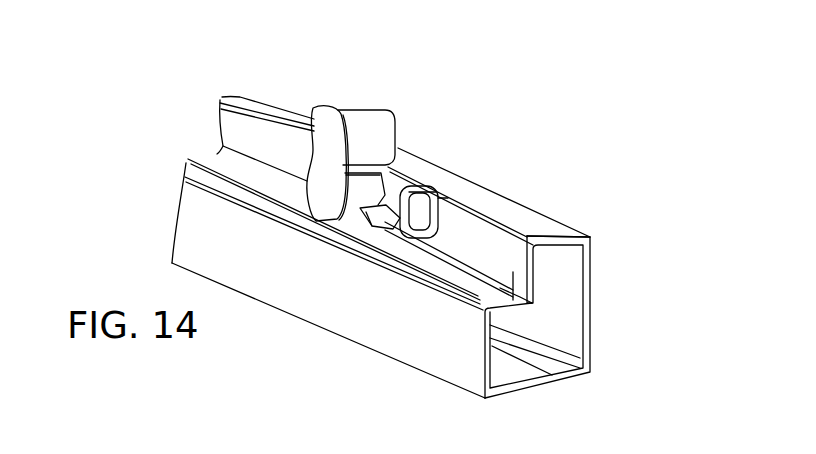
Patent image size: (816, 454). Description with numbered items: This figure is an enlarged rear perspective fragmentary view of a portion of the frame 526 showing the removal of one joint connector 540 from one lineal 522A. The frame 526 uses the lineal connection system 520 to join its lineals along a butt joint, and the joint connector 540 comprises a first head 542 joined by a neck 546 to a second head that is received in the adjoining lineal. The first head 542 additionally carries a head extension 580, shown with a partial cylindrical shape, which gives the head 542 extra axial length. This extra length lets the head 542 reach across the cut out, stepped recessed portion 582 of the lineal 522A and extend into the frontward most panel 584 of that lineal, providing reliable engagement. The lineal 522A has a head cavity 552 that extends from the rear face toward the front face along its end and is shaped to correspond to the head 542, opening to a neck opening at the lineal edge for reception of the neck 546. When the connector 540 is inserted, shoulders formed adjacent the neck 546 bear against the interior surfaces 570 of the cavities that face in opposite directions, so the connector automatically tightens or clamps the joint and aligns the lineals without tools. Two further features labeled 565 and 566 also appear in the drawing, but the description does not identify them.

The lineal connection system 520 is at (470, 170).
The lineal 522A is at (553, 231).
The frame 526 is at (574, 111).
The joint connector 540 is at (361, 208).
The first head 542 is at (375, 192).
The neck 546 is at (362, 168).
The head cavity 552 is at (440, 231).
The back wall top 565 is at (251, 98).
The clip lobe 566 is at (327, 108).
The interior surfaces 570 is at (445, 197).
The head extension 580 is at (420, 238).
The stepped recessed portion 582 is at (217, 155).
The frontward most panel 584 is at (518, 212).